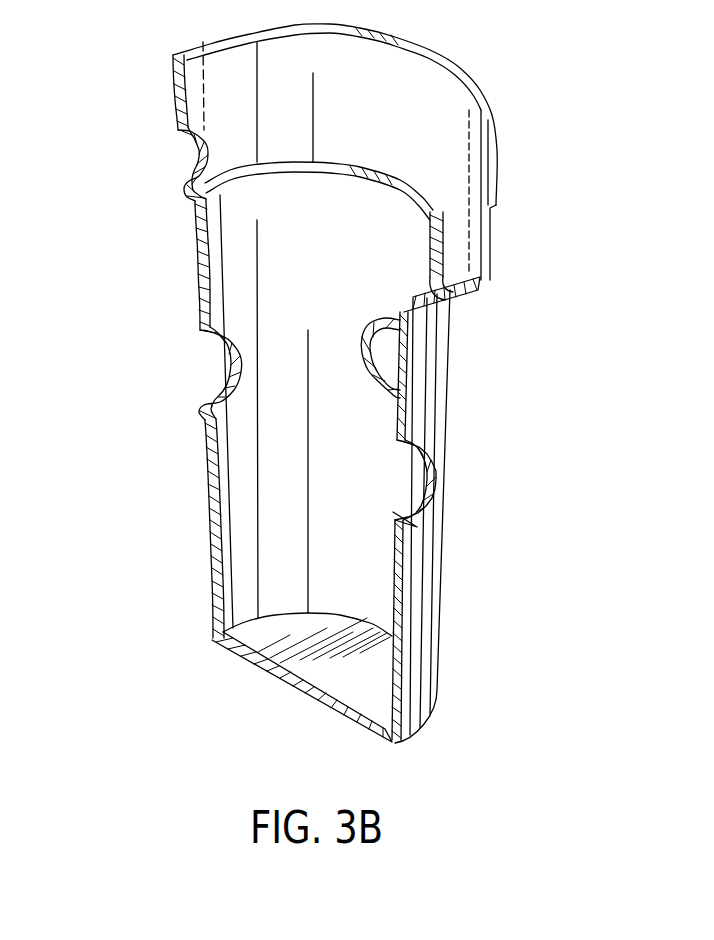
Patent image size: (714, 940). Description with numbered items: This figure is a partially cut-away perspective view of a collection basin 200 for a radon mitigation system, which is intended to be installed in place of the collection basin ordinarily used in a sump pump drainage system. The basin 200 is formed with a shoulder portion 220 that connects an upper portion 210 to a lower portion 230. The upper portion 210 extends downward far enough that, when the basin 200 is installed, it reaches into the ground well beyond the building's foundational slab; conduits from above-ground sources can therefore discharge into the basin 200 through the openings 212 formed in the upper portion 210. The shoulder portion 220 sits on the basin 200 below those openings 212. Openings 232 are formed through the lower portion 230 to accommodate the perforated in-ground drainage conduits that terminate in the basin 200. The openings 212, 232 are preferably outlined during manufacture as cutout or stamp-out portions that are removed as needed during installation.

The basin 200 is at (498, 173).
The upper portion 210 is at (430, 80).
The openings 212 is at (187, 150).
The shoulder portion 220 is at (198, 214).
The lower portion 230 is at (433, 447).
The openings 232 is at (227, 368).